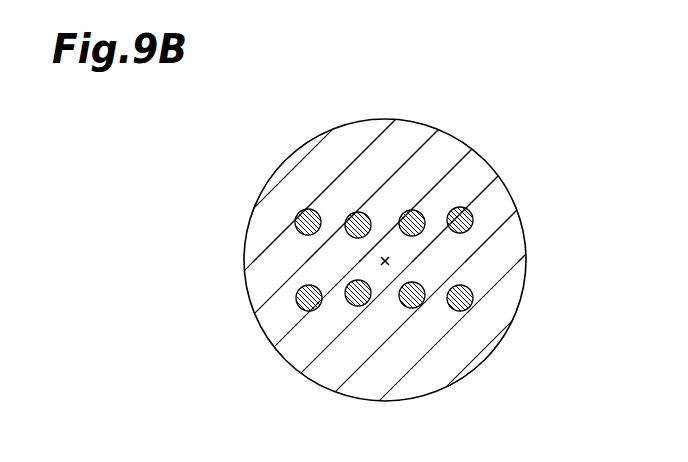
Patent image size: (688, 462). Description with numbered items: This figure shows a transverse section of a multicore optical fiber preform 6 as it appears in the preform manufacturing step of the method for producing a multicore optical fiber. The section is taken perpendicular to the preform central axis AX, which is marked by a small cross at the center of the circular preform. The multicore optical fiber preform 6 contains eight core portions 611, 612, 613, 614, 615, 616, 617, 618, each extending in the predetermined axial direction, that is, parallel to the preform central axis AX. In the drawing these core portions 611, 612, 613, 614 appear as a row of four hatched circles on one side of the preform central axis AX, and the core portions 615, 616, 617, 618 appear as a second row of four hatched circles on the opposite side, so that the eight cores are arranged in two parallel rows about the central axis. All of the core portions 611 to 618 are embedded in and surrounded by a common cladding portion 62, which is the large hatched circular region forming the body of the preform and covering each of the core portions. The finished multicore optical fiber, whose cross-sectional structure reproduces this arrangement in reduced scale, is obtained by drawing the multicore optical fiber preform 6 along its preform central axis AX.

The multicore optical fiber preform 6 is at (535, 146).
The common cladding portion 62 is at (512, 248).
The preform central axis AX is at (392, 259).
The core portion 611 is at (308, 210).
The core portion 612 is at (358, 212).
The core portion 613 is at (412, 210).
The core portion 614 is at (461, 207).
The core portion 615 is at (308, 311).
The core portion 616 is at (358, 306).
The core portion 617 is at (413, 308).
The core portion 618 is at (461, 311).